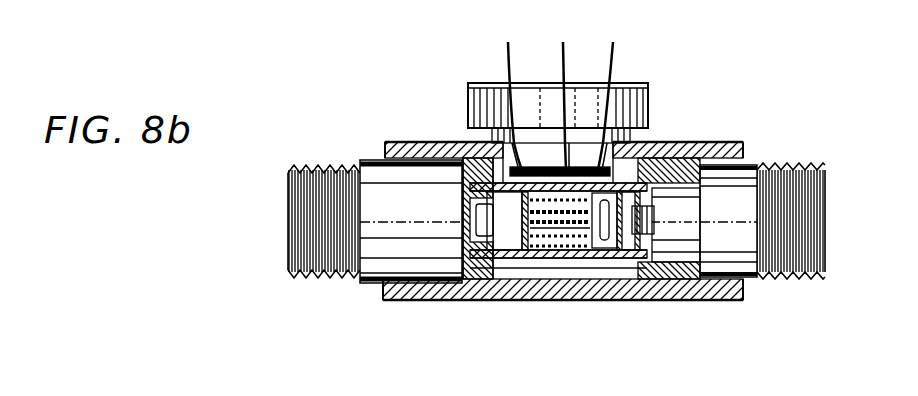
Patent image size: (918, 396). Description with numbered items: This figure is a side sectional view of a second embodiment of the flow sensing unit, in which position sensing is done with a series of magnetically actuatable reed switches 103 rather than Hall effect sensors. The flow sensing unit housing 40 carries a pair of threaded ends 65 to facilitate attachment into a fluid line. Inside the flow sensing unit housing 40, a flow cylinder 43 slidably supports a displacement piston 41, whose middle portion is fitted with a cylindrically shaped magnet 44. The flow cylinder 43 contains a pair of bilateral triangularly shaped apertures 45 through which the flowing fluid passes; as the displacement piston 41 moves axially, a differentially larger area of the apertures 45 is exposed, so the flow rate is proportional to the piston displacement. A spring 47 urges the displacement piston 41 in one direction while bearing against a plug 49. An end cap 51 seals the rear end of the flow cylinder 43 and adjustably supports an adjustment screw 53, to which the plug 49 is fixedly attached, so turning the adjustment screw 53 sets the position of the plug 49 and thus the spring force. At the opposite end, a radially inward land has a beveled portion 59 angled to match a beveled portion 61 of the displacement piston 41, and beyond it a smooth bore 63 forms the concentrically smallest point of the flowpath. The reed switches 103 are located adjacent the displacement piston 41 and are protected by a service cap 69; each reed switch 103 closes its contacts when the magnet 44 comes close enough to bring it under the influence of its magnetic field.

The flow sensing unit housing 40 is at (712, 300).
The displacement piston 41 is at (493, 258).
The flow cylinder 43 is at (556, 258).
The magnet 44 is at (525, 258).
The triangularly shaped apertures 45 is at (490, 258).
The spring 47 is at (600, 258).
The plug 49 is at (628, 258).
The end cap 51 is at (675, 160).
The adjustment screw 53 is at (694, 188).
The beveled portion of land 59 is at (470, 216).
The beveled portion of displacement piston 61 is at (466, 196).
The smooth bore 63 is at (425, 300).
The threaded ends 65 is at (316, 185).
The service cap 69 is at (466, 82).
The magnetically actuatable reed switches 103 is at (563, 101).